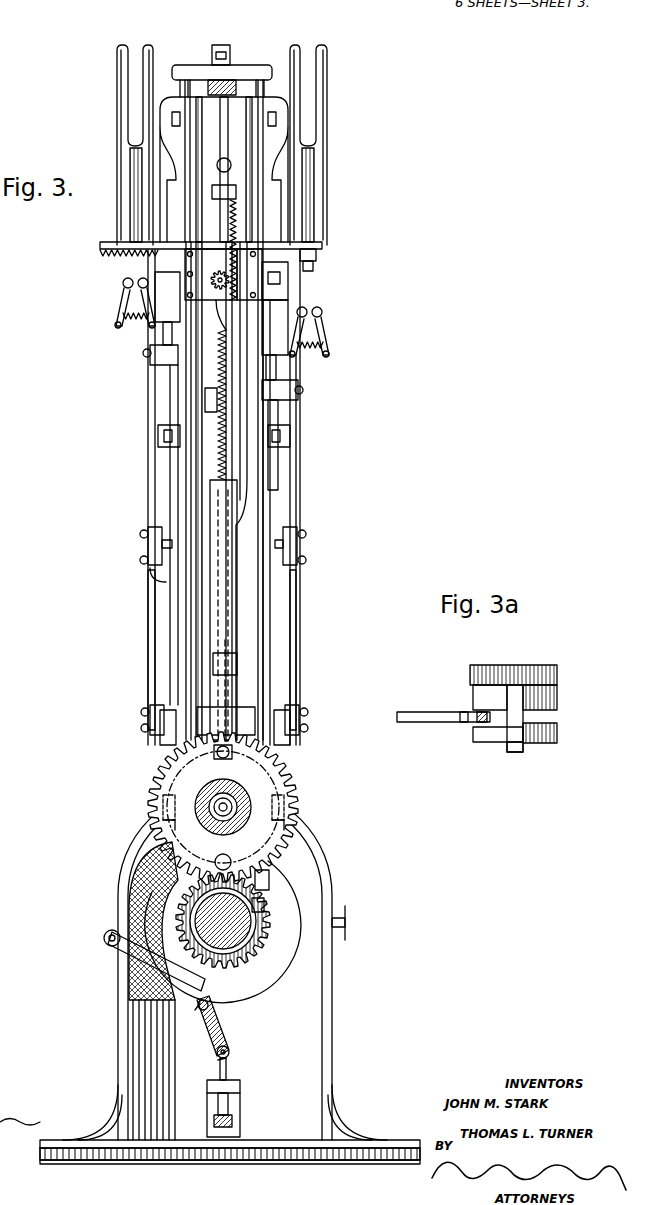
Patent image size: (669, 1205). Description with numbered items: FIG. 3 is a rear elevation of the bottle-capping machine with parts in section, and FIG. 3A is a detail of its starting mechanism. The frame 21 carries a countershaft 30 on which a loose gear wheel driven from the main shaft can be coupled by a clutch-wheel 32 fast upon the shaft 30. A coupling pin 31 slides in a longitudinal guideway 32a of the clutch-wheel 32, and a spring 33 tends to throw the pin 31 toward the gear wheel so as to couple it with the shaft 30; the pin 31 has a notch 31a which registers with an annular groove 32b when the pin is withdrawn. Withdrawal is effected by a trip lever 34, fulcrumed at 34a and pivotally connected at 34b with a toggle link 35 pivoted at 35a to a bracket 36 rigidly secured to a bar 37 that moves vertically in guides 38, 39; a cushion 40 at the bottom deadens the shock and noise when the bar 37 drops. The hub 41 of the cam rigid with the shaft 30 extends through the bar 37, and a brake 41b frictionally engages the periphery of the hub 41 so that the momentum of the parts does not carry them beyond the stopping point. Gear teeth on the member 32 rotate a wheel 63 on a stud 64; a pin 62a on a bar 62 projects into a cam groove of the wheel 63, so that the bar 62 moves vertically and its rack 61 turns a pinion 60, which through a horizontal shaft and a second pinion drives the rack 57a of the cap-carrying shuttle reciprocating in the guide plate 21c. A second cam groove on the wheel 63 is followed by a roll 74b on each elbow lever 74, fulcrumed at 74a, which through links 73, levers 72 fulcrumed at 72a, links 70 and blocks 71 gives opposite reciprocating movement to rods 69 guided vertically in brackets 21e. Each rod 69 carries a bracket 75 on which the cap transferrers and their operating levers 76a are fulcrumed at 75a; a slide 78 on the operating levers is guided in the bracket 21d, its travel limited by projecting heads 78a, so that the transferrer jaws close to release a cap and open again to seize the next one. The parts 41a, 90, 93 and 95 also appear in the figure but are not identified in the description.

In FIG. 3, the frame 21 is at (258, 513).
In FIG. 3, the guide plate 21c is at (276, 266).
In FIG. 3, the bracket 21d is at (322, 242).
In FIG. 3, the brackets 21e is at (284, 437).
In FIG. 3, the countershaft 30 is at (250, 936).
In FIG. 3, the coupling pin 31 is at (266, 880).
In FIG. 3A, the coupling pin 31 is at (506, 750).
In FIG. 3A, the notch 31a is at (508, 734).
In FIG. 3, the clutch-wheel 32 is at (200, 905).
In FIG. 3A, the clutch-wheel 32 is at (558, 697).
In FIG. 3A, the longitudinal guideway 32a is at (530, 668).
In FIG. 3, the annular groove 32b is at (260, 906).
In FIG. 3A, the annular groove 32b is at (545, 715).
In FIG. 3A, the spring 33 is at (505, 691).
In FIG. 3, the trip lever 34 is at (130, 967).
In FIG. 3A, the trip lever 34 is at (425, 722).
In FIG. 3, the fulcrum 34a is at (104, 935).
In FIG. 3, the pivotal connection 34b is at (212, 1005).
In FIG. 3, the toggle link 35 is at (212, 1039).
In FIG. 3, the pivot 35a is at (232, 1052).
In FIG. 3, the bracket 36 is at (229, 1028).
In FIG. 3, the bar 37 is at (220, 1069).
In FIG. 3, the guide 38 is at (240, 1089).
In FIG. 3, the guide 39 is at (205, 400).
In FIG. 3, the cushion 40 is at (234, 1123).
In FIG. 3, the hub 41 is at (280, 971).
In FIG. 3, the cam plate web 41a is at (162, 885).
In FIG. 3, the brake 41b is at (336, 912).
In FIG. 3, the rack 57a is at (106, 258).
In FIG. 3, the pinion 60 is at (212, 282).
In FIG. 3, the rack 61 is at (222, 257).
In FIG. 3, the bar 62 is at (228, 574).
In FIG. 3, the pin 62a is at (236, 730).
In FIG. 3, the wheel 63 is at (266, 766).
In FIG. 3, the stud 64 is at (168, 797).
In FIG. 3, the rods 69 is at (278, 368).
In FIG. 3, the links 70 is at (152, 470).
In FIG. 3, the blocks 71 is at (146, 353).
In FIG. 3, the levers 72 is at (148, 546).
In FIG. 3, the fulcrum 72a is at (150, 572).
In FIG. 3, the links 73 is at (150, 616).
In FIG. 3, the elbow levers 74 is at (162, 749).
In FIG. 3, the fulcrum 74a is at (150, 722).
In FIG. 3, the roll 74b is at (166, 808).
In FIG. 3, the bracket 75 is at (221, 313).
In FIG. 3, the fulcrum 75a is at (326, 337).
In FIG. 3, the operating levers 76a is at (126, 230).
In FIG. 3, the slide 78 is at (316, 255).
In FIG. 3, the projecting heads 78a is at (314, 266).
In FIG. 3, the ring 90 is at (224, 178).
In FIG. 3, the cap 93 is at (210, 82).
In FIG. 3, the knob 95 is at (232, 58).